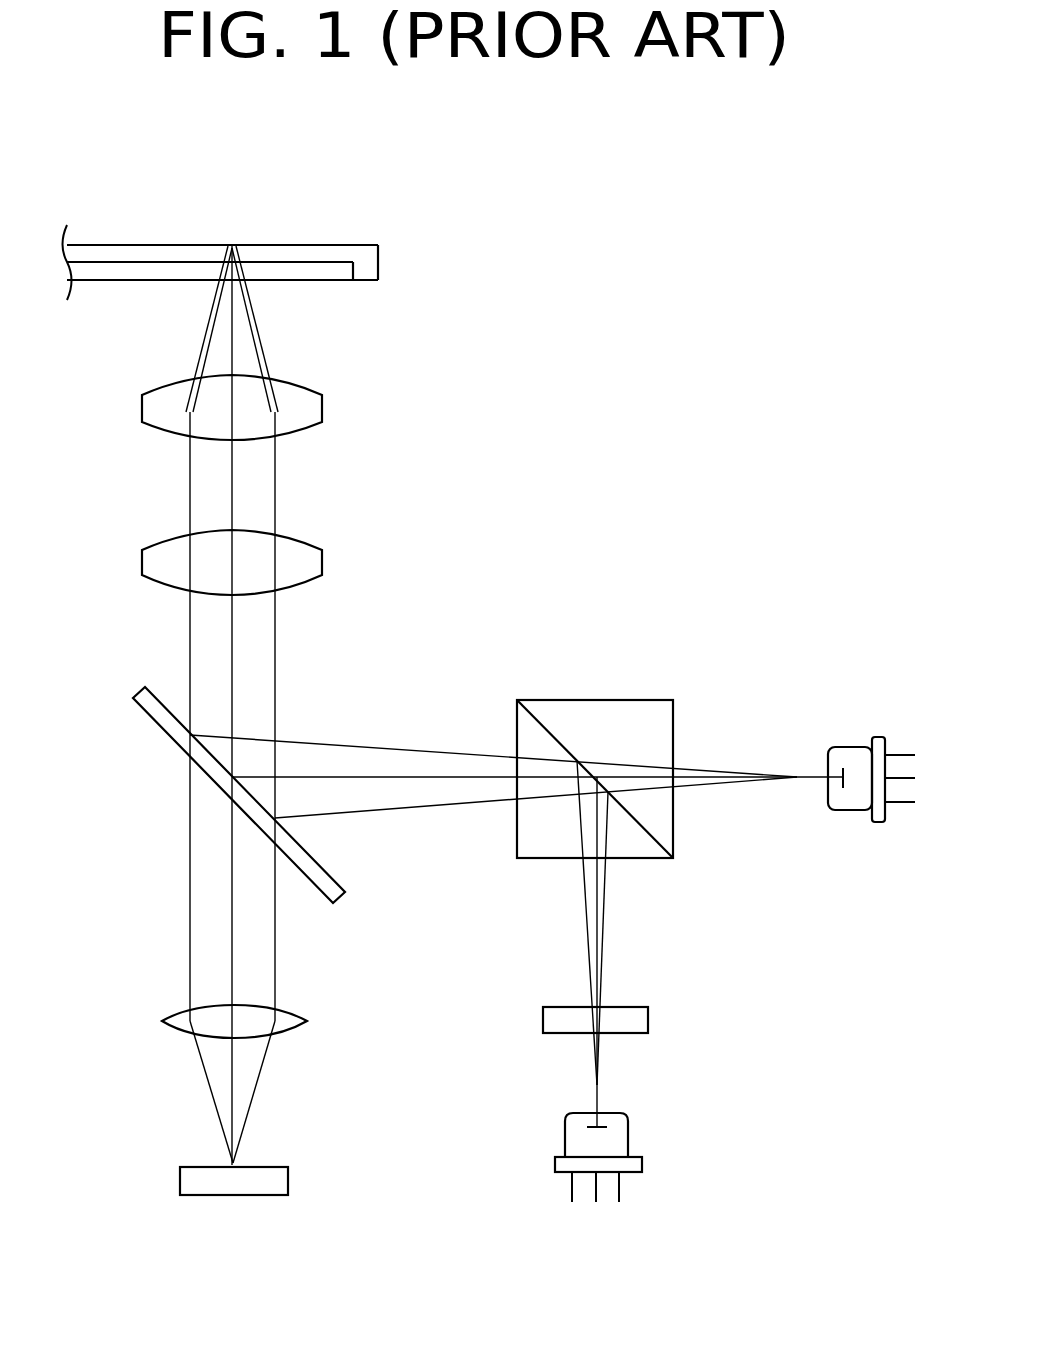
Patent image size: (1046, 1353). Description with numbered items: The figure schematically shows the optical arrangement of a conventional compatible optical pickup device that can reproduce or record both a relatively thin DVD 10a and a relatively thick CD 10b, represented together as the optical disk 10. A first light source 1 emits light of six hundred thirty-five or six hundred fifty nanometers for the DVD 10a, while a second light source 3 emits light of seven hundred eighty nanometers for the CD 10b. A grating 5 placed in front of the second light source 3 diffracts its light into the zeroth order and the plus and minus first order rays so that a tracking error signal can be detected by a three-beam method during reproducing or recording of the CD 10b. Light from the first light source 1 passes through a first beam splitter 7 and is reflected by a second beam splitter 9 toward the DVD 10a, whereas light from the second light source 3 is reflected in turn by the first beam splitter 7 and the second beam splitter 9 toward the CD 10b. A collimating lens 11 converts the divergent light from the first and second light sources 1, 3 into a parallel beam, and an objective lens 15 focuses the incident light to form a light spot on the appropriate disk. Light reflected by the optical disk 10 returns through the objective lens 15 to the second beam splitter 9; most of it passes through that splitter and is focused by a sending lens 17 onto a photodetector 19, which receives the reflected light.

The optical disk 10 is at (209, 235).
The DVD 10a is at (335, 283).
The CD 10b is at (303, 256).
The objective lens 15 is at (142, 410).
The collimating lens 11 is at (142, 563).
The second beam splitter 9 is at (141, 709).
The first beam splitter 7 is at (588, 700).
The first light source 1 is at (853, 747).
The grating 5 is at (648, 1018).
The second light source 3 is at (626, 1142).
The sending lens 17 is at (162, 1020).
The photodetector 19 is at (180, 1180).